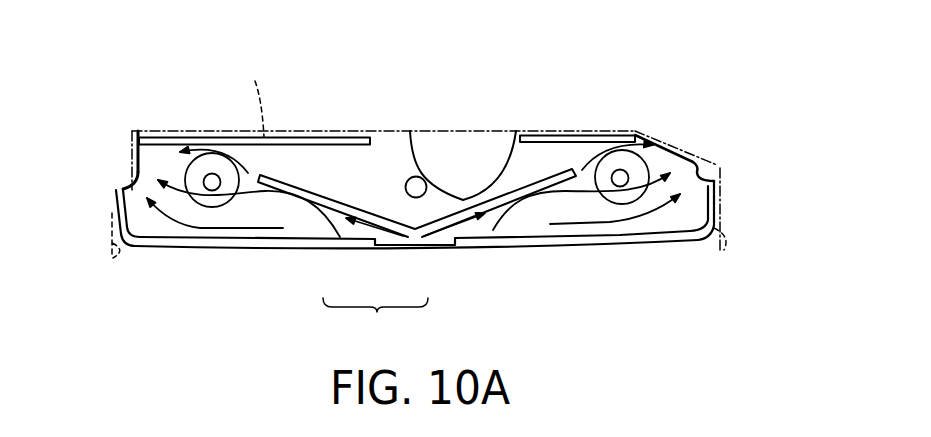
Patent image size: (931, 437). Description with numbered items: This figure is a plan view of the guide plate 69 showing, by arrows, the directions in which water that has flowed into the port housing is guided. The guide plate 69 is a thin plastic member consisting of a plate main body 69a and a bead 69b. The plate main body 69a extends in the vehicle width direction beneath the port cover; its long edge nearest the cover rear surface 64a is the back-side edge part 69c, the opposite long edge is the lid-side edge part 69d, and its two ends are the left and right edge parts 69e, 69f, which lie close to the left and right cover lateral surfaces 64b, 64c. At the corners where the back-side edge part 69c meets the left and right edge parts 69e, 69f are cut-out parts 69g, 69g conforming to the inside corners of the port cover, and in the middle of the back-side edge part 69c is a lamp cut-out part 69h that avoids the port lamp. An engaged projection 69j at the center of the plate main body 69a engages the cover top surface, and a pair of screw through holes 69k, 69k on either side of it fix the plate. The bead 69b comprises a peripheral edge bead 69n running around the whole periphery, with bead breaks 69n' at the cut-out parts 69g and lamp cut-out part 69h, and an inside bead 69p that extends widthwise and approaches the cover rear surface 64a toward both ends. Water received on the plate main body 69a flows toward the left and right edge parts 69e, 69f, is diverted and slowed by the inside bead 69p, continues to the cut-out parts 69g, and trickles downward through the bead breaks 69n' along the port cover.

The guide plate 69 is at (358, 118).
The plate main body 69a is at (313, 157).
The bead 69b is at (375, 322).
The back-side edge part 69c is at (548, 134).
The lid-side edge part 69d is at (614, 247).
The left edge part 69e is at (716, 218).
The right edge part 69f is at (117, 214).
The cut-out part 69g is at (135, 172).
The lamp cut-out part 69h is at (503, 170).
The engaged projection 69j is at (419, 185).
The screw through hole 69k is at (214, 181).
The peripheral edge bead 69n is at (415, 268).
The bead break 69n' is at (420, 125).
The inside bead 69p is at (365, 212).
The cover rear surface 64a is at (259, 100).
The left cover lateral surface 64b is at (728, 248).
The right cover lateral surface 64c is at (110, 257).